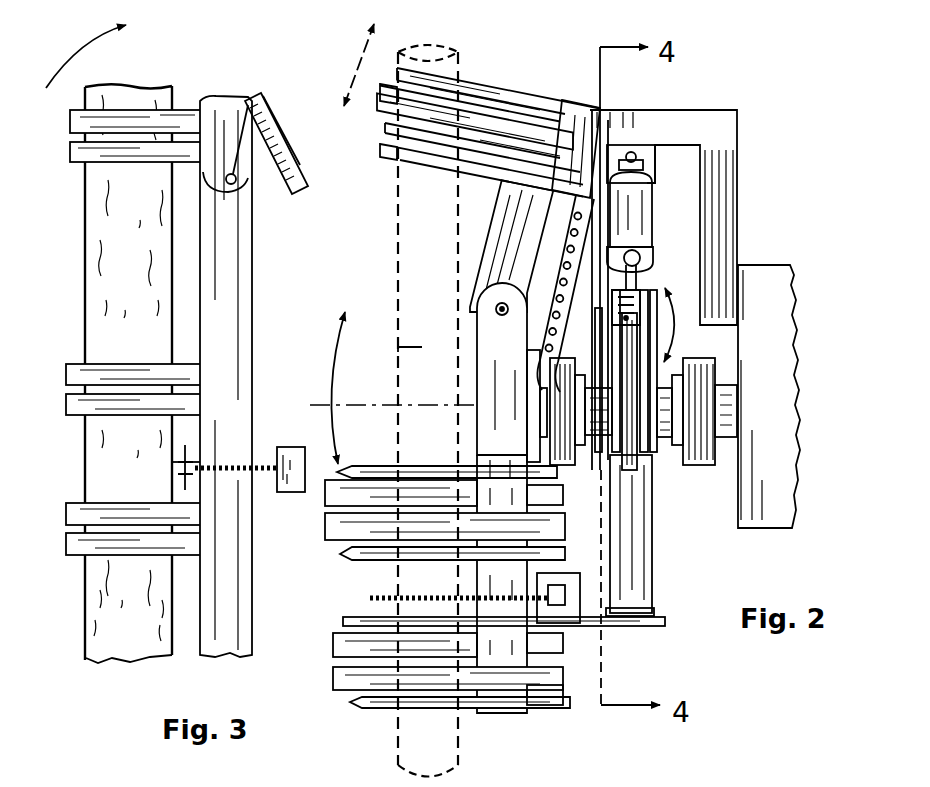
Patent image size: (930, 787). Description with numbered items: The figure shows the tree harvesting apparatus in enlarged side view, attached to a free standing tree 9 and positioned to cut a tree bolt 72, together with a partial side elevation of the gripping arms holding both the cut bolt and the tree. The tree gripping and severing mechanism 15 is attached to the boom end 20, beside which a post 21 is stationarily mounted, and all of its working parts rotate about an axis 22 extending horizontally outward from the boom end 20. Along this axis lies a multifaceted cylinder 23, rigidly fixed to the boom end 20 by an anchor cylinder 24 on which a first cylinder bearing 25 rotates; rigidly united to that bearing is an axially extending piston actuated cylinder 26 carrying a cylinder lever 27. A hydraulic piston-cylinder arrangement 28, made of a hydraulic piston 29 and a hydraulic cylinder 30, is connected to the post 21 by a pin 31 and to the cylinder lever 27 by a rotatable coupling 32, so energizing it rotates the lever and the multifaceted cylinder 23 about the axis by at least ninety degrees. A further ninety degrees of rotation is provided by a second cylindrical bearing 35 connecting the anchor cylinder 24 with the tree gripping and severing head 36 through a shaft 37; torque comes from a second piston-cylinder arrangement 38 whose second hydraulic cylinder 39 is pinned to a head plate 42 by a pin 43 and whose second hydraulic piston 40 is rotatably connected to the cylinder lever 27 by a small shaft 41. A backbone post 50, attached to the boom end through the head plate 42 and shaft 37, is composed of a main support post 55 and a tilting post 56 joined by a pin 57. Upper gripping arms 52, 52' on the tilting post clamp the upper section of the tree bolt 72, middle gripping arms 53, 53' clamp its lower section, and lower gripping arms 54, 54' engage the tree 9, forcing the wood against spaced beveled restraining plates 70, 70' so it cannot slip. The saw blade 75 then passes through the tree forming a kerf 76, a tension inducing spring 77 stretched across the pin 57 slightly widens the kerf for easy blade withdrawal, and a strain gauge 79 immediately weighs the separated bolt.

In FIG. 3, the free standing tree 9 is at (102, 623).
In FIG. 2, the free standing tree 9 is at (420, 748).
In FIG. 2, the tree gripping and severing mechanism 15 is at (395, 262).
In FIG. 2, the boom end 20 is at (745, 260).
In FIG. 2, the post 21 is at (660, 116).
In FIG. 2, the axis 22 is at (335, 408).
In FIG. 2, the multifaceted cylinder 23 is at (713, 466).
In FIG. 2, the anchor cylinder 24 is at (718, 383).
In FIG. 2, the first cylinder bearing 25 is at (678, 362).
In FIG. 2, the piston actuated cylinder 26 is at (662, 440).
In FIG. 2, the cylinder lever 27 is at (612, 337).
In FIG. 2, the hydraulic piston-cylinder arrangement 28 is at (653, 231).
In FIG. 2, the hydraulic piston 29 is at (645, 278).
In FIG. 2, the hydraulic cylinder 30 is at (653, 212).
In FIG. 2, the pin 31 is at (640, 158).
In FIG. 2, the rotatable coupling 32 is at (620, 298).
In FIG. 2, the second cylindrical bearing 35 is at (573, 458).
In FIG. 2, the tree gripping and severing head 36 is at (482, 246).
In FIG. 2, the shaft 37 is at (548, 362).
In FIG. 2, the second piston-cylinder arrangement 38 is at (662, 581).
In FIG. 2, the second hydraulic cylinder 39 is at (638, 538).
In FIG. 2, the second hydraulic piston 40 is at (622, 450).
In FIG. 2, the small shaft 41 is at (680, 325).
In FIG. 2, the head plate 42 is at (662, 624).
In FIG. 2, the pin 43 is at (656, 610).
In FIG. 2, the backbone post 50 is at (497, 384).
In FIG. 3, the gripping arm 52 is at (114, 156).
In FIG. 2, the gripping arm 52 is at (470, 106).
In FIG. 3, the gripping arm 52' is at (114, 124).
In FIG. 3, the middle gripping arm 53 is at (111, 404).
In FIG. 2, the middle gripping arm 53 is at (424, 536).
In FIG. 3, the middle gripping arm 53' is at (111, 373).
In FIG. 2, the middle gripping arm 53' is at (423, 500).
In FIG. 3, the lower gripping arm 54 is at (111, 544).
In FIG. 2, the lower gripping arm 54 is at (426, 687).
In FIG. 3, the lower gripping arm 54' is at (111, 513).
In FIG. 2, the lower gripping arm 54' is at (423, 645).
In FIG. 3, the main support post 55 is at (233, 366).
In FIG. 2, the main support post 55 is at (492, 441).
In FIG. 3, the tilting post 56 is at (212, 186).
In FIG. 2, the tilting post 56 is at (497, 270).
In FIG. 3, the pin 57 is at (246, 188).
In FIG. 2, the pin 57 is at (496, 308).
In FIG. 2, the beveled restraining plate 70 is at (378, 163).
In FIG. 2, the beveled restraining plate 70' is at (490, 133).
In FIG. 3, the tree bolt 72 is at (85, 269).
In FIG. 2, the saw blade 75 is at (370, 598).
In FIG. 3, the kerf 76 is at (105, 468).
In FIG. 3, the tension inducing spring 77 is at (306, 160).
In FIG. 2, the tension inducing spring 77 is at (566, 262).
In FIG. 3, the strain gauge 79 is at (197, 452).